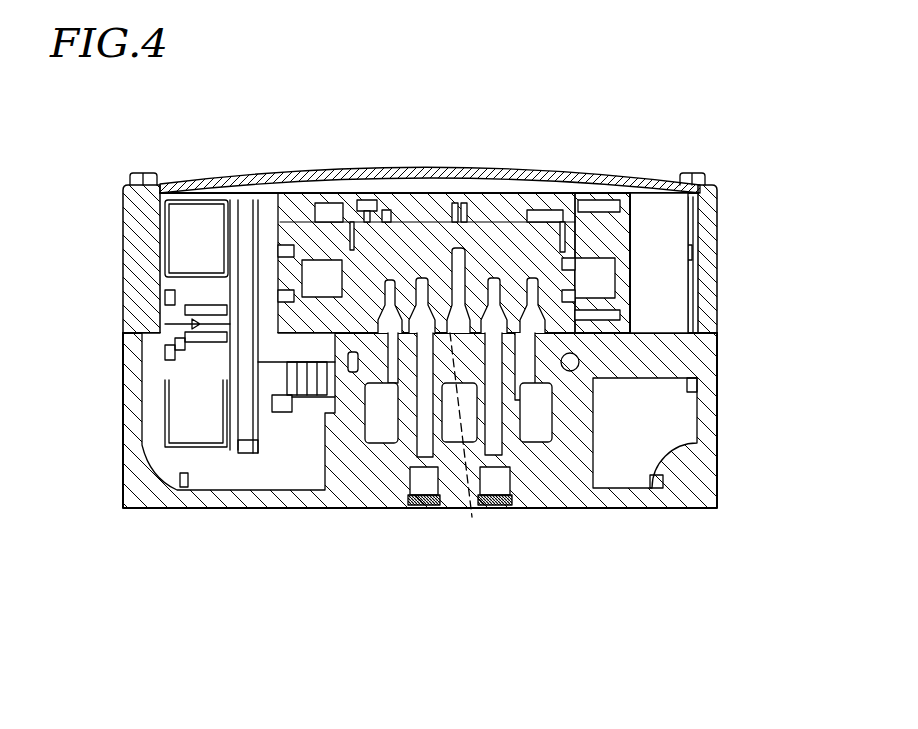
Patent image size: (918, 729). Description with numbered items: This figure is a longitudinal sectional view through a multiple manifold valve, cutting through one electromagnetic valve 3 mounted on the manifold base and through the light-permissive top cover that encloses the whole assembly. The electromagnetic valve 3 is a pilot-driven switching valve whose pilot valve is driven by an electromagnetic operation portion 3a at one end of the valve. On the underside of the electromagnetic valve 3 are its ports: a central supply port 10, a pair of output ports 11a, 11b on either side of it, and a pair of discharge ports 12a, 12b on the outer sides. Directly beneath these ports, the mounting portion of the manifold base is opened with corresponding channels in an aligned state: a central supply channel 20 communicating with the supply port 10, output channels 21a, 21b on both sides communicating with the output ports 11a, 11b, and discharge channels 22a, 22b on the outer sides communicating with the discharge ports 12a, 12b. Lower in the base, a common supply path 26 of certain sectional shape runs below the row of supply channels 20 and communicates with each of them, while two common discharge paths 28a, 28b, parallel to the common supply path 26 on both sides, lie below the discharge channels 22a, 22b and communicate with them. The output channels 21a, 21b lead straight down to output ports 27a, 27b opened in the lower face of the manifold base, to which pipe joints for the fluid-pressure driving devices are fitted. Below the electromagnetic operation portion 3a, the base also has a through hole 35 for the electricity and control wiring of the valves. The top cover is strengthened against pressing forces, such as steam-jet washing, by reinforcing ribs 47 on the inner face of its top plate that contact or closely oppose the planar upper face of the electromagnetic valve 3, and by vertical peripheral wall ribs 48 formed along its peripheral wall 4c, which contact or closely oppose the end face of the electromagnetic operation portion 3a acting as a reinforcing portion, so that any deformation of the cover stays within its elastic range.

The electromagnetic valve 3 is at (622, 242).
The electromagnetic operation portion 3a is at (190, 227).
The peripheral wall 4c is at (707, 223).
The supply port 10 is at (460, 268).
The output port 11a is at (427, 270).
The output port 11b is at (496, 290).
The discharge port 12a is at (390, 290).
The discharge port 12b is at (533, 290).
The supply channel 20 is at (467, 447).
The output channel 21a is at (427, 363).
The output channel 21b is at (495, 427).
The discharge channel 22a is at (390, 365).
The discharge channel 22b is at (528, 360).
The common supply path 26 is at (457, 427).
The output port 27a is at (425, 487).
The output port 27b is at (495, 490).
The common discharge path 28a is at (378, 425).
The common discharge path 28b is at (548, 433).
The through hole for wiring 35 is at (228, 470).
The reinforcing rib 47 is at (331, 178).
The peripheral wall rib 48 is at (143, 253).